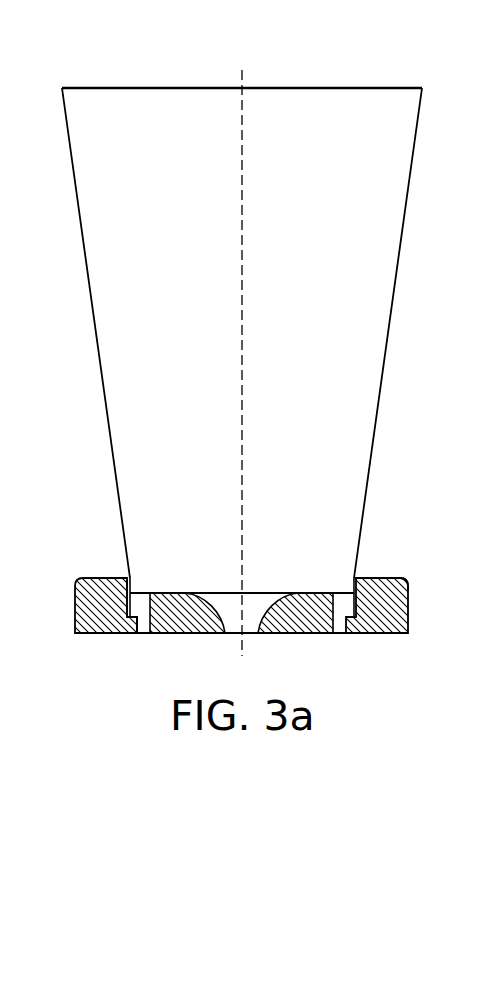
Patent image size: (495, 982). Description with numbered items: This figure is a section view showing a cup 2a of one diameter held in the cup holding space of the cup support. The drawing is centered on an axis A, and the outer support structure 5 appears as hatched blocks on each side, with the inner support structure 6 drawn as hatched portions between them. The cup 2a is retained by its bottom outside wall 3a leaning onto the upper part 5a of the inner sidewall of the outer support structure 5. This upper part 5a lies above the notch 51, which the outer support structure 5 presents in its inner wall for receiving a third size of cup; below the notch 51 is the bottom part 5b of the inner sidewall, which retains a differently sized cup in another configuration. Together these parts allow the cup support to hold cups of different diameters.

The optical axis A is at (242, 350).
The cup 2a is at (345, 102).
The bottom outside wall 3a is at (128, 581).
The outer support structure 5 is at (86, 598).
The upper part of the inner sidewall 5a is at (117, 606).
The bottom part of the inner sidewall 5b is at (364, 579).
The notch 51 is at (130, 626).
The inner support structure 6 is at (180, 626).